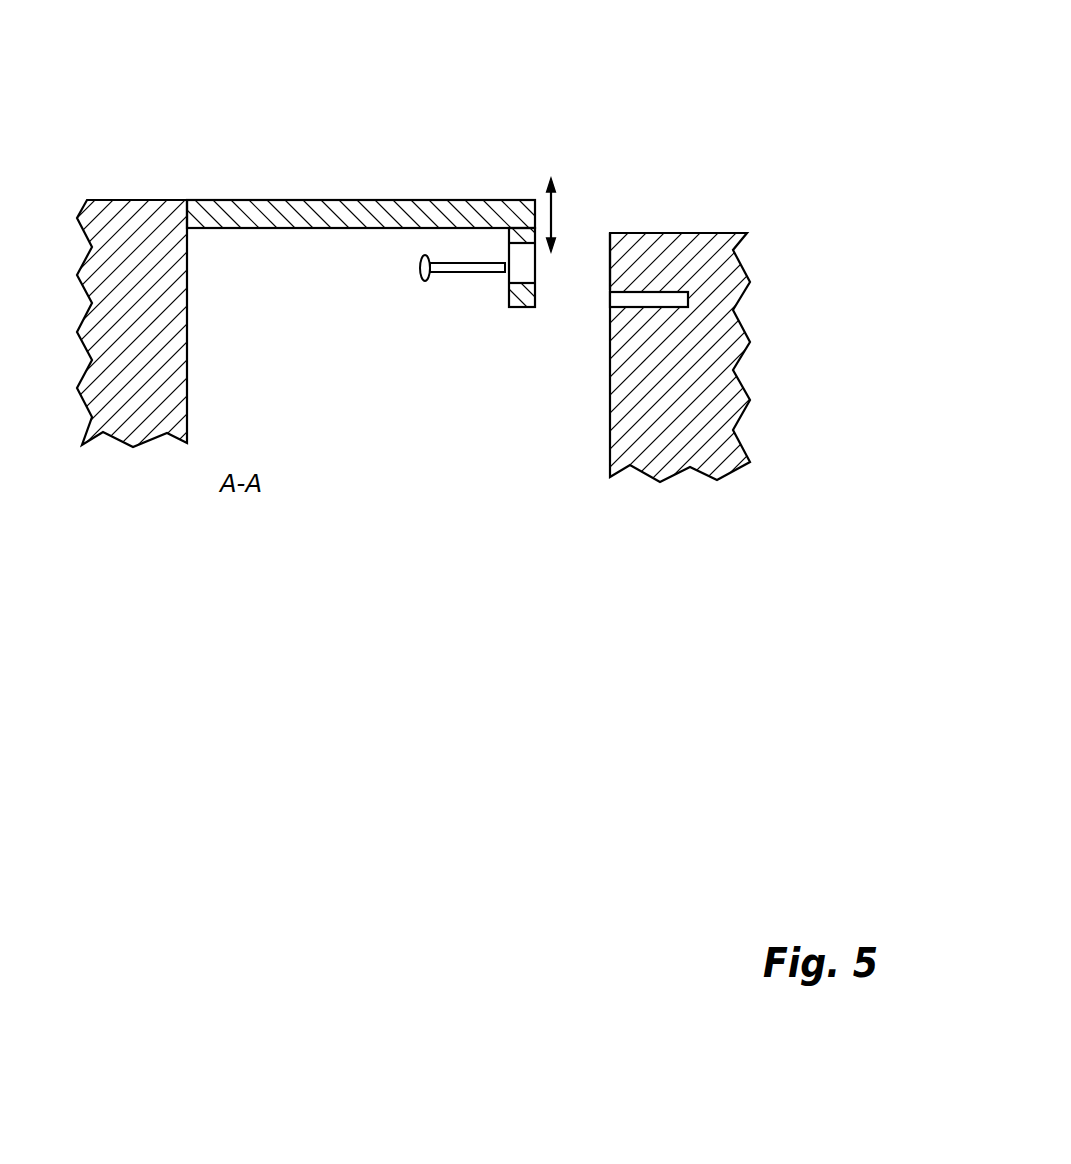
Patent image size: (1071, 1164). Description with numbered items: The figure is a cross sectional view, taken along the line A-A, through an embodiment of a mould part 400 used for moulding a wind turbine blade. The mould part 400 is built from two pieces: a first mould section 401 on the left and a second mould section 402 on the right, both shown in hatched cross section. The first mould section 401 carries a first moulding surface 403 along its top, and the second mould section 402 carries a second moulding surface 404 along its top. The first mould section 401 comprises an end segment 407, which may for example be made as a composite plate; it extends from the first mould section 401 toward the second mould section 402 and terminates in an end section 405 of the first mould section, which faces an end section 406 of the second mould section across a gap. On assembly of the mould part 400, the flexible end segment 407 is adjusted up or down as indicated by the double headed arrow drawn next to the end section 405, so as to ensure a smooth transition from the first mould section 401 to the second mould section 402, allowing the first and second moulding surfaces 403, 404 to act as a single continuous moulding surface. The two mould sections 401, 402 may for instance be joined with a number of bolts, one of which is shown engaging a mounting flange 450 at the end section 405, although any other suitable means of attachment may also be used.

The mould part 400 is at (670, 81).
The first mould section 401 is at (132, 238).
The second mould section 402 is at (700, 253).
The first moulding surface 403 is at (160, 200).
The second moulding surface 404 is at (658, 233).
The end section of first mould section 405 is at (538, 213).
The end section of second mould section 406 is at (607, 237).
The end segment 407 is at (387, 212).
The mounting flange 450 is at (509, 291).